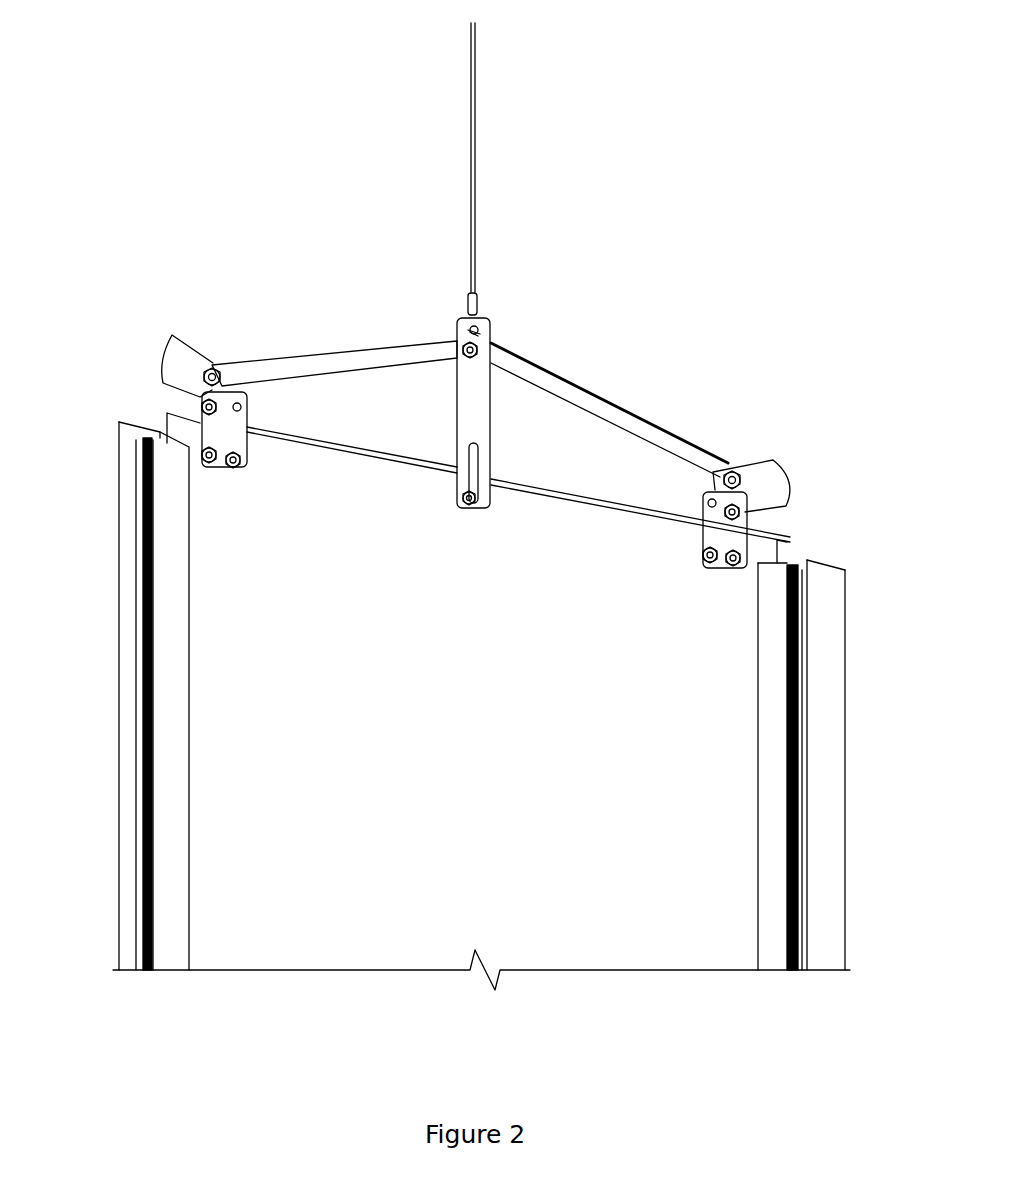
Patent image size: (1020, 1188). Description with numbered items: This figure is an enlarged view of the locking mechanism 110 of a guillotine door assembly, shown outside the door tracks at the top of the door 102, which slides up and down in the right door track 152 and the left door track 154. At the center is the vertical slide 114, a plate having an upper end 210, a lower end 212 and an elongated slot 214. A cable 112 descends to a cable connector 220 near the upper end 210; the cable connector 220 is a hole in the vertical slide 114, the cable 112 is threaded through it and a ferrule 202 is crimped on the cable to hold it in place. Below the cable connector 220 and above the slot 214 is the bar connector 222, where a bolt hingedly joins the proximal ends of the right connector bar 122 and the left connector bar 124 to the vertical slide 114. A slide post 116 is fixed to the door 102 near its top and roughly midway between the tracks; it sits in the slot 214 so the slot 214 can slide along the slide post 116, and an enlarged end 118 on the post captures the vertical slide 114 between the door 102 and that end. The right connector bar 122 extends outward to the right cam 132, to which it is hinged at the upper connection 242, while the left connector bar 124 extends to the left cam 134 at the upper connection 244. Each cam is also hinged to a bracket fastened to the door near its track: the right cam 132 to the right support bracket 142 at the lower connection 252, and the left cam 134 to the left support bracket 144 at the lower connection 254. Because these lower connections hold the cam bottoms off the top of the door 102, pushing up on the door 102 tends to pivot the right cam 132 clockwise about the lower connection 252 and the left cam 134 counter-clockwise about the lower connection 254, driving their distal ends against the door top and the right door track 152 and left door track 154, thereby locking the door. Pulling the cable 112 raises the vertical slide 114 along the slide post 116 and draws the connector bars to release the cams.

The locking mechanism 110 is at (310, 162).
The cable 112 is at (536, 157).
The ferrule 202 is at (480, 297).
The vertical slide 114 is at (493, 434).
The upper end 210 is at (458, 320).
The cable connector 220 is at (480, 322).
The bar connector 222 is at (464, 354).
The slot 214 is at (480, 456).
The lower end 212 is at (485, 508).
The enlarged end 118 is at (466, 495).
The slide post 116 is at (466, 505).
The left connector bar 124 is at (410, 352).
The right connector bar 122 is at (570, 388).
The left cam 134 is at (226, 319).
The upper connection 244 is at (216, 372).
The left support bracket 144 is at (186, 479).
The lower connection 254 is at (204, 407).
The right cam 132 is at (775, 428).
The upper connection 242 is at (732, 474).
The right support bracket 142 is at (744, 557).
The lower connection 252 is at (738, 513).
The door 102 is at (481, 701).
The left door track 154 is at (182, 792).
The right door track 152 is at (772, 879).